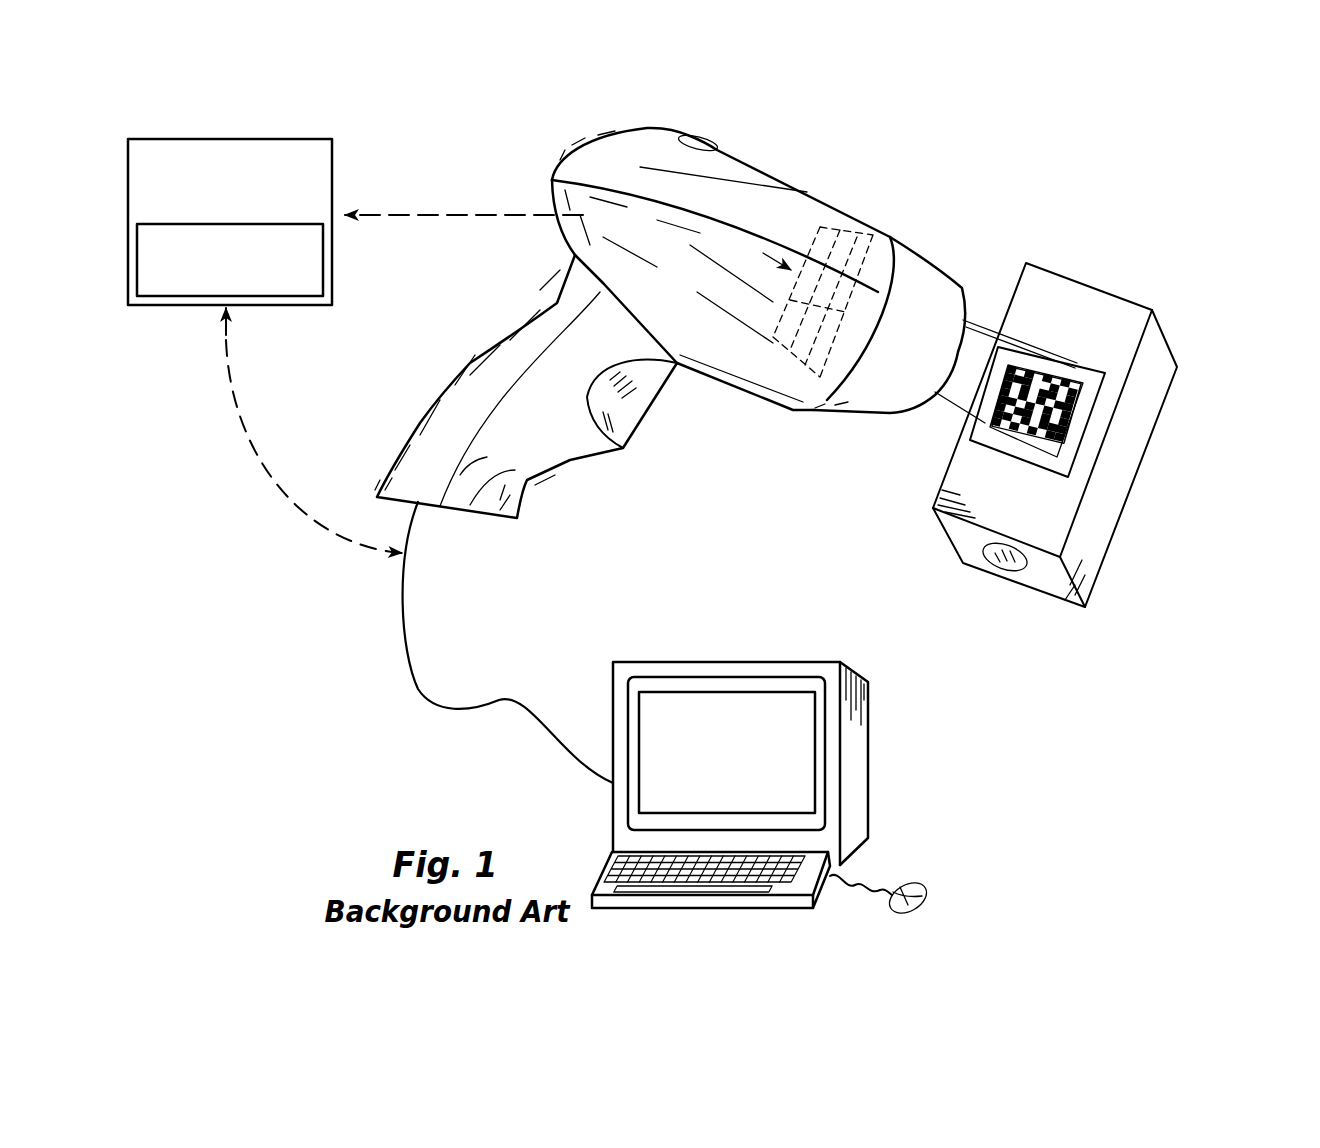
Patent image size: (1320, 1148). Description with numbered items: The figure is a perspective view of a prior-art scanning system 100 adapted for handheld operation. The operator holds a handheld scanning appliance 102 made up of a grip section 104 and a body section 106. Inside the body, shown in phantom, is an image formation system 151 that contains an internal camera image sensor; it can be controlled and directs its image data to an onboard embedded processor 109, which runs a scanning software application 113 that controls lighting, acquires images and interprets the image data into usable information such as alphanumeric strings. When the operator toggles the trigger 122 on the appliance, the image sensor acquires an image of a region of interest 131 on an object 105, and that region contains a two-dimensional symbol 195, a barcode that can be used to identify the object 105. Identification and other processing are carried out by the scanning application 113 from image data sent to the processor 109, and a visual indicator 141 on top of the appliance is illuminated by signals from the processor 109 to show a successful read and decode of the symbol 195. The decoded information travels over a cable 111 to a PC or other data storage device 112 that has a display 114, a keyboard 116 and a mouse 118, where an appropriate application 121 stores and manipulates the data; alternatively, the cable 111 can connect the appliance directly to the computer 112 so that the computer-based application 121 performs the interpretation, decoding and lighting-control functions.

The scanning system 100 is at (1205, 234).
The handheld scanning appliance 102 is at (782, 151).
The grip section 104 is at (588, 466).
The object 105 is at (1135, 447).
The body section 106 is at (750, 387).
The onboard embedded processor 109 is at (296, 139).
The cable 111 is at (408, 595).
The PC or data storage device 112 is at (863, 819).
The scanning software application 113 is at (296, 305).
The display 114 is at (787, 677).
The keyboard 116 is at (813, 898).
The mouse 118 is at (918, 873).
The application 121 is at (693, 693).
The trigger 122 is at (657, 407).
The region of interest 131 is at (1082, 355).
The visual indicator 141 is at (708, 131).
The image formation system 151 is at (822, 403).
The two-dimensional symbol 195 is at (1110, 383).